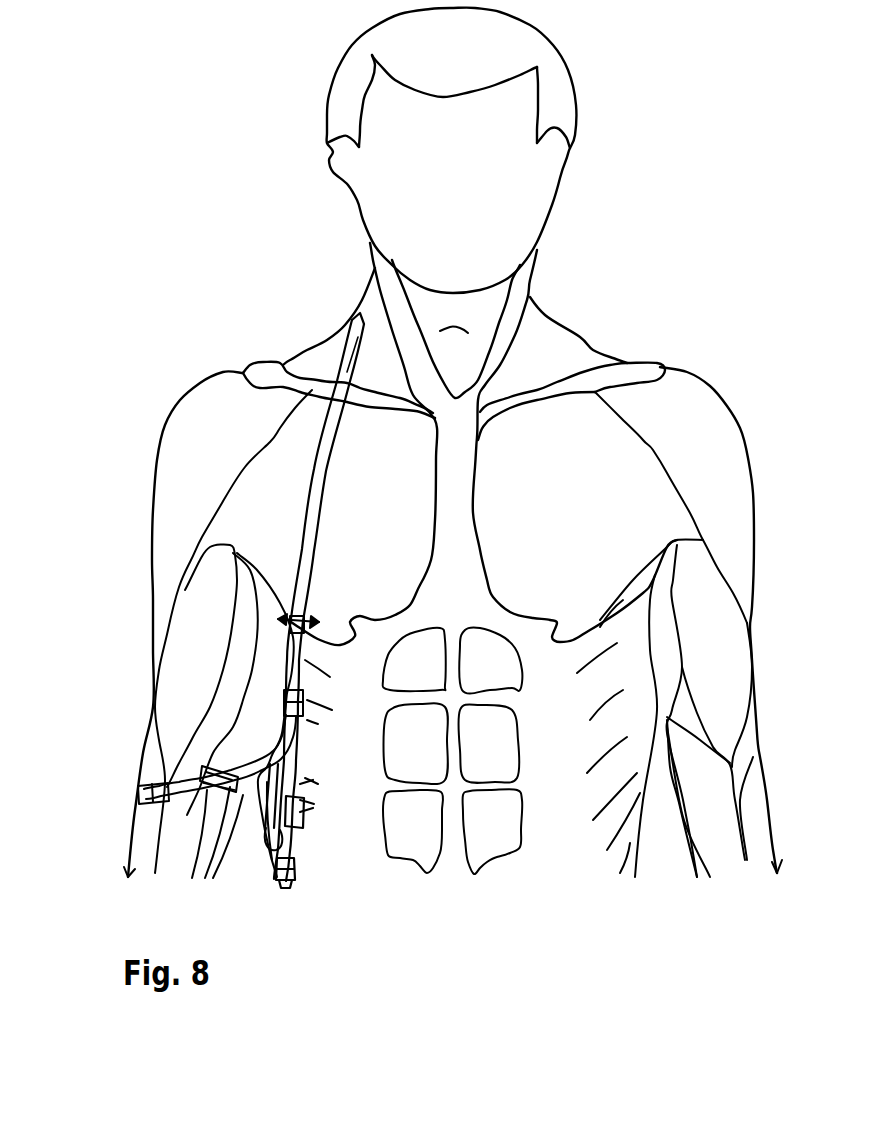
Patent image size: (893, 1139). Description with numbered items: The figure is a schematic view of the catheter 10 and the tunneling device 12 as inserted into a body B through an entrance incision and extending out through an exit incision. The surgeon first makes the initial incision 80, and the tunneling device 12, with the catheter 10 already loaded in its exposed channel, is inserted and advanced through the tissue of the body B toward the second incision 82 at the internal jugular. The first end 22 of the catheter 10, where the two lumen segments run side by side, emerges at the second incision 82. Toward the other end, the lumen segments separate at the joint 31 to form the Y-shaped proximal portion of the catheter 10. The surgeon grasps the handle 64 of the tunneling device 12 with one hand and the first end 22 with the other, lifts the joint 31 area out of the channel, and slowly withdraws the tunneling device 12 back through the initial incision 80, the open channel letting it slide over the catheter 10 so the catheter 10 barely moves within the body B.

The body B is at (290, 450).
The first end of the catheter 22 is at (337, 360).
The second incision 82 is at (345, 390).
The initial incision 80 is at (320, 617).
The joint 31 is at (307, 700).
The tunneling device 12 is at (270, 700).
The catheter 10 is at (197, 771).
The handle 64 is at (266, 829).